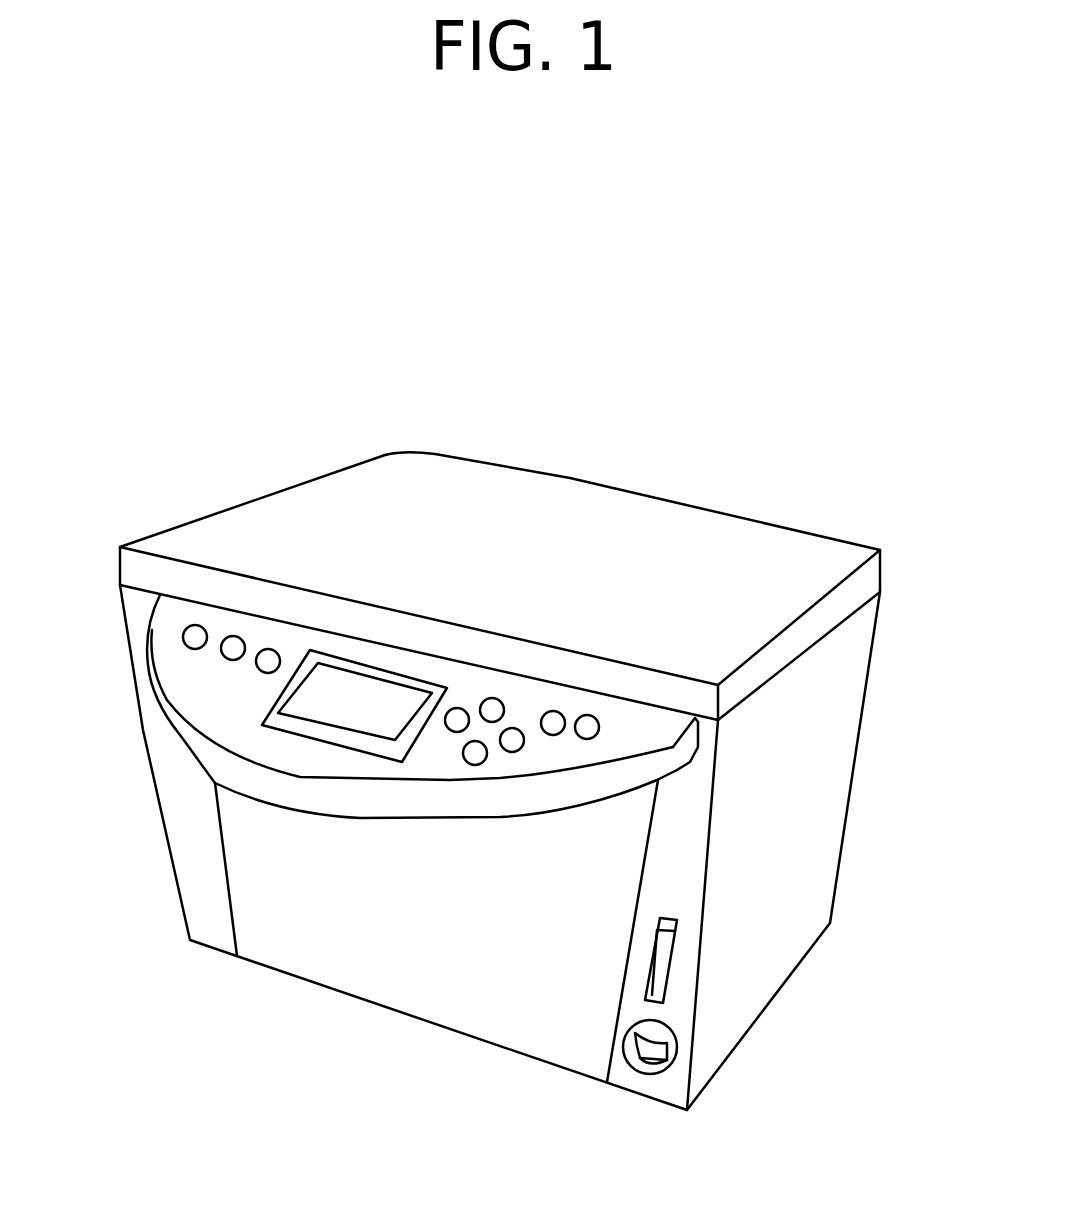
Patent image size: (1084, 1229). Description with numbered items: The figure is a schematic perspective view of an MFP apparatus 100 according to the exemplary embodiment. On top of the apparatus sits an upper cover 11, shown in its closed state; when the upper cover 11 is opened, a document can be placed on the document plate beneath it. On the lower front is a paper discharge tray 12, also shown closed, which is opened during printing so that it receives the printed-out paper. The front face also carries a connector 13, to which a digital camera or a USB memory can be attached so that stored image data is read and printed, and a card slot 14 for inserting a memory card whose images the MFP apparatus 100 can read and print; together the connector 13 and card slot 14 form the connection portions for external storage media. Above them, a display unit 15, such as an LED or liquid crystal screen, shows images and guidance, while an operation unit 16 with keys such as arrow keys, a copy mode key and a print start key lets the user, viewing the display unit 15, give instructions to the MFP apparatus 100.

The MFP apparatus 100 is at (355, 360).
The upper cover 11 is at (675, 528).
The paper discharge tray 12 is at (277, 937).
The connector 13 is at (668, 1050).
The card slot 14 is at (663, 988).
The display unit 15 is at (347, 688).
The operation unit 16 is at (237, 637).